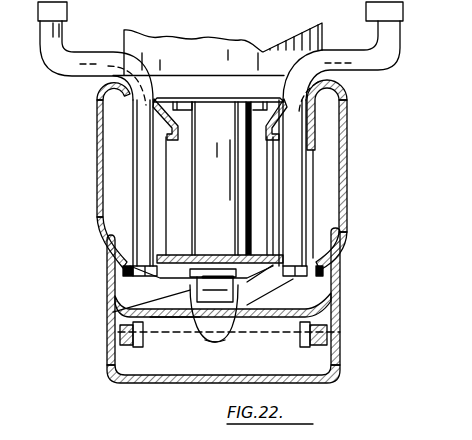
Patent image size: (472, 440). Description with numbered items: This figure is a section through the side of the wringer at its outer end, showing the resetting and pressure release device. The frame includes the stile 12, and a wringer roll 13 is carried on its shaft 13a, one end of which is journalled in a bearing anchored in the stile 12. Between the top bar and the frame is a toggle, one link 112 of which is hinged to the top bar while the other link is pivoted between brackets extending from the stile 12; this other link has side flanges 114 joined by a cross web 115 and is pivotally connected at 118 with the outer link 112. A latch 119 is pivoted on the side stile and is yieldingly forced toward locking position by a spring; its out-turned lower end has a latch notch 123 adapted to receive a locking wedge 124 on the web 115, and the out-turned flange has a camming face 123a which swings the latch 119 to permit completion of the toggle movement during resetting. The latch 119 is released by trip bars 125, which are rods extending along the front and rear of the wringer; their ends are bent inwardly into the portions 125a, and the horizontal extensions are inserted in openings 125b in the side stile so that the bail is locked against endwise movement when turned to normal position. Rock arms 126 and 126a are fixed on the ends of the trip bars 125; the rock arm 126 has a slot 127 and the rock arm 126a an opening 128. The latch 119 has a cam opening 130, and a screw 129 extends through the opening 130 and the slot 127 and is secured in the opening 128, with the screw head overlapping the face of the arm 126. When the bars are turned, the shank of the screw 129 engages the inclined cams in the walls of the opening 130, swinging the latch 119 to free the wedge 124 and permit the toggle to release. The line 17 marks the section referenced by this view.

The stile 12 is at (348, 163).
The wringer roll 13 is at (287, 47).
The shaft 13a is at (222, 112).
The section line 17 is at (118, 333).
The toggle link 112 is at (164, 384).
The side flanges 114 is at (133, 347).
The cross web 115 is at (163, 312).
The pivotal connection 118 is at (114, 338).
The latch 119 is at (194, 251).
The latch notch 123 is at (237, 322).
The camming face 123a is at (208, 334).
The locking wedge 124 is at (252, 290).
The trip bars 125 is at (73, 77).
The pipe tube portion 125a is at (138, 189).
The openings 125b is at (127, 103).
The rock arm 126 is at (324, 272).
The rock arm 126a is at (124, 275).
The slot 127 is at (200, 288).
The opening 128 is at (282, 250).
The screw 129 is at (138, 305).
The cam opening 130 is at (197, 252).